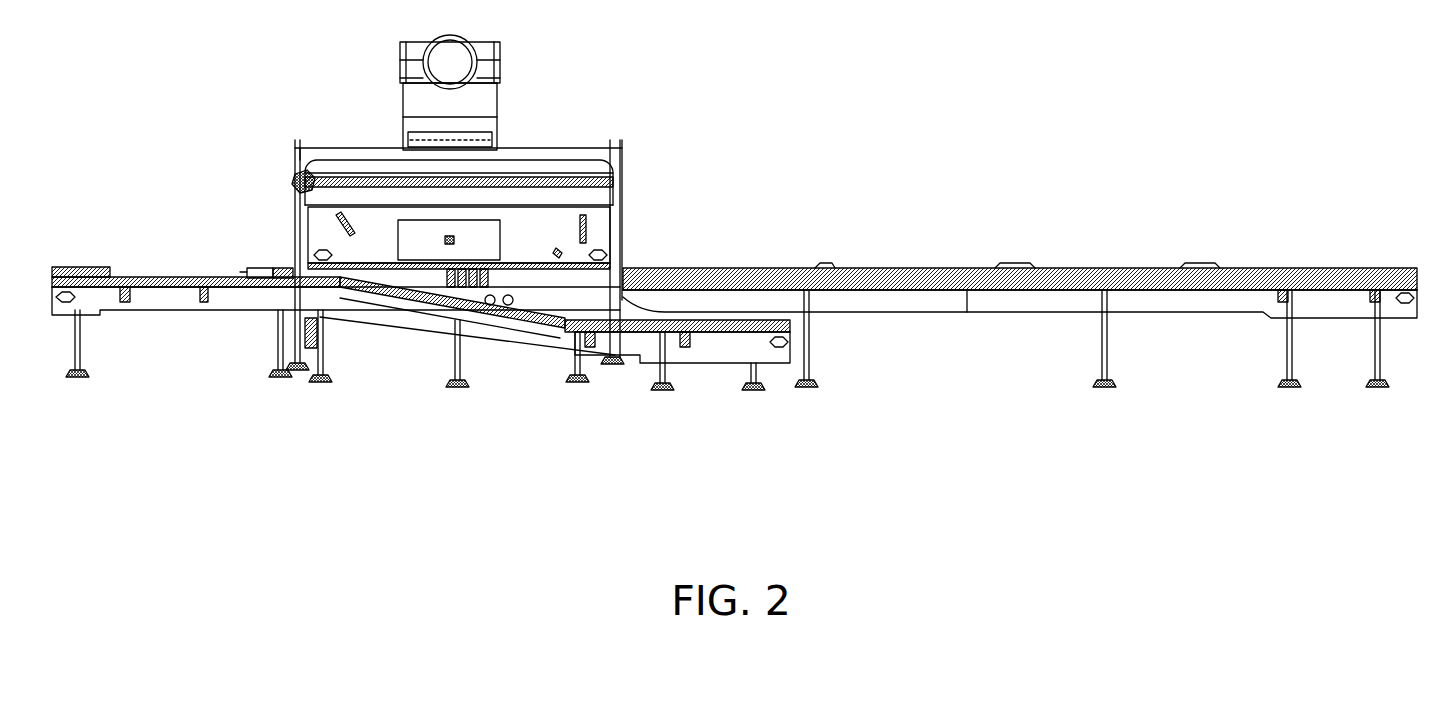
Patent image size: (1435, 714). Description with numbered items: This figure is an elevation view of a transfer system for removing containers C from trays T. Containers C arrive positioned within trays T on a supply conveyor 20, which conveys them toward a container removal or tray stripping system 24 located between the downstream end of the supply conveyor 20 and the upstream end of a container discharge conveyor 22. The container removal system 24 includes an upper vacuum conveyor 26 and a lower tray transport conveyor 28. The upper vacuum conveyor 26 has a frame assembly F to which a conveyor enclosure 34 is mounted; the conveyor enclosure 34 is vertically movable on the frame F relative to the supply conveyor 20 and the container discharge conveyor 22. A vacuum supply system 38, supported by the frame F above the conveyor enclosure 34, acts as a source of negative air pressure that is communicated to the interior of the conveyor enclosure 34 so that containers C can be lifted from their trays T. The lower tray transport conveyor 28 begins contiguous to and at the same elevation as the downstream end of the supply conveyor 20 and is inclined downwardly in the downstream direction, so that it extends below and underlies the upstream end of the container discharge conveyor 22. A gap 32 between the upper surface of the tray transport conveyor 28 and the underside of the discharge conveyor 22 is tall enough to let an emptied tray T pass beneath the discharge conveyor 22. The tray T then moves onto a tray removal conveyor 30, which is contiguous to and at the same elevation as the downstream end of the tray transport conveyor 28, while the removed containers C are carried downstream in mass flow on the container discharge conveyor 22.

The supply conveyor 20 is at (206, 225).
The container discharge conveyor 22 is at (908, 226).
The container removal system 24 is at (631, 100).
The upper vacuum conveyor 26 is at (631, 214).
The lower tray transport conveyor 28 is at (411, 333).
The tray removal conveyor 30 is at (696, 368).
The gap 32 is at (509, 306).
The conveyor enclosure 34 is at (589, 205).
The vacuum supply system 38 is at (381, 97).
The frame assembly F is at (628, 156).
The tray T is at (246, 272).
The container C is at (256, 268).